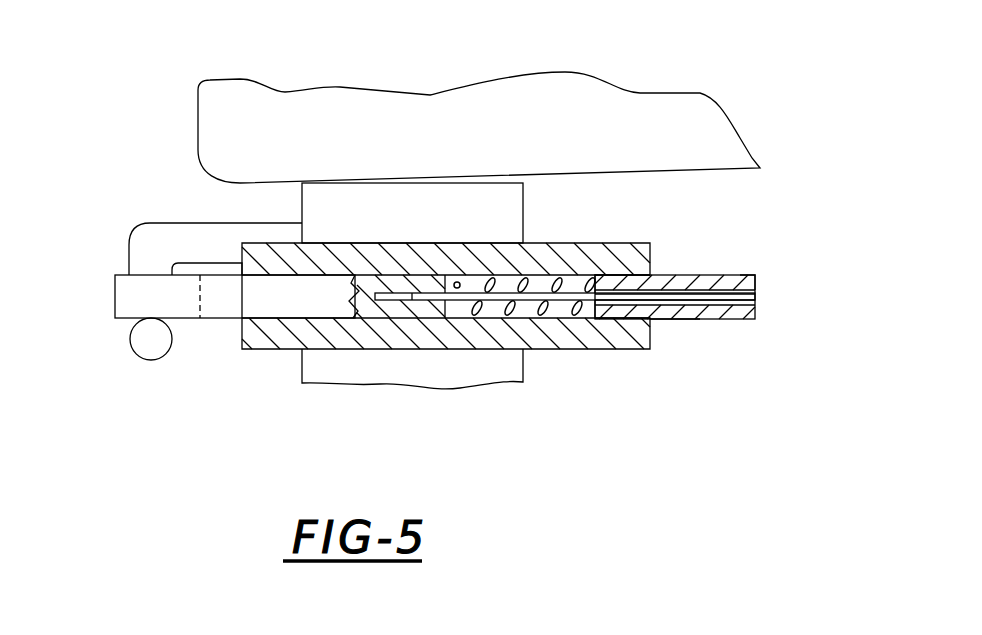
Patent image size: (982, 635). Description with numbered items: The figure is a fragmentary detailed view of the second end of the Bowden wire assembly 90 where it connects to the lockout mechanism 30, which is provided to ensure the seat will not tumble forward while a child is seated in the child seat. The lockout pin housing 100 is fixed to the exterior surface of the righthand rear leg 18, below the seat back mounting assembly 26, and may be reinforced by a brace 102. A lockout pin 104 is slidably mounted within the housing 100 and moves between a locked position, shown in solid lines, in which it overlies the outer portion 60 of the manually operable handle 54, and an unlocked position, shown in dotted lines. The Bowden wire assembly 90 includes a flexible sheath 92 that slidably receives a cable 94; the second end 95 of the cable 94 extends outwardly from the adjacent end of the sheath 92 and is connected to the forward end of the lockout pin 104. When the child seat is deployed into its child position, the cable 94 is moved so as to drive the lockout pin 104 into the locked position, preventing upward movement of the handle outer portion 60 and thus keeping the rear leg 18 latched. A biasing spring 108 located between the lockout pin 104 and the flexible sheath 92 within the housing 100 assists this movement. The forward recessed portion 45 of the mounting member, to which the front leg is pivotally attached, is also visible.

The seat back mounting assembly 26 is at (198, 123).
The manually operable handle 54 is at (148, 234).
The outer portion of handle 60 is at (158, 345).
The lockout pin 104 is at (279, 312).
The lockout pin housing 100 is at (420, 345).
The brace 102 is at (430, 205).
The rear leg 18 is at (527, 365).
The second end of cable 95 is at (420, 298).
The biasing spring 108 is at (540, 280).
The lockout mechanism 30 is at (652, 258).
The Bowden wire assembly 90 is at (747, 320).
The flexible sheath 92 is at (744, 276).
The cable 94 is at (722, 300).
The forward recessed portion 45 is at (683, 321).